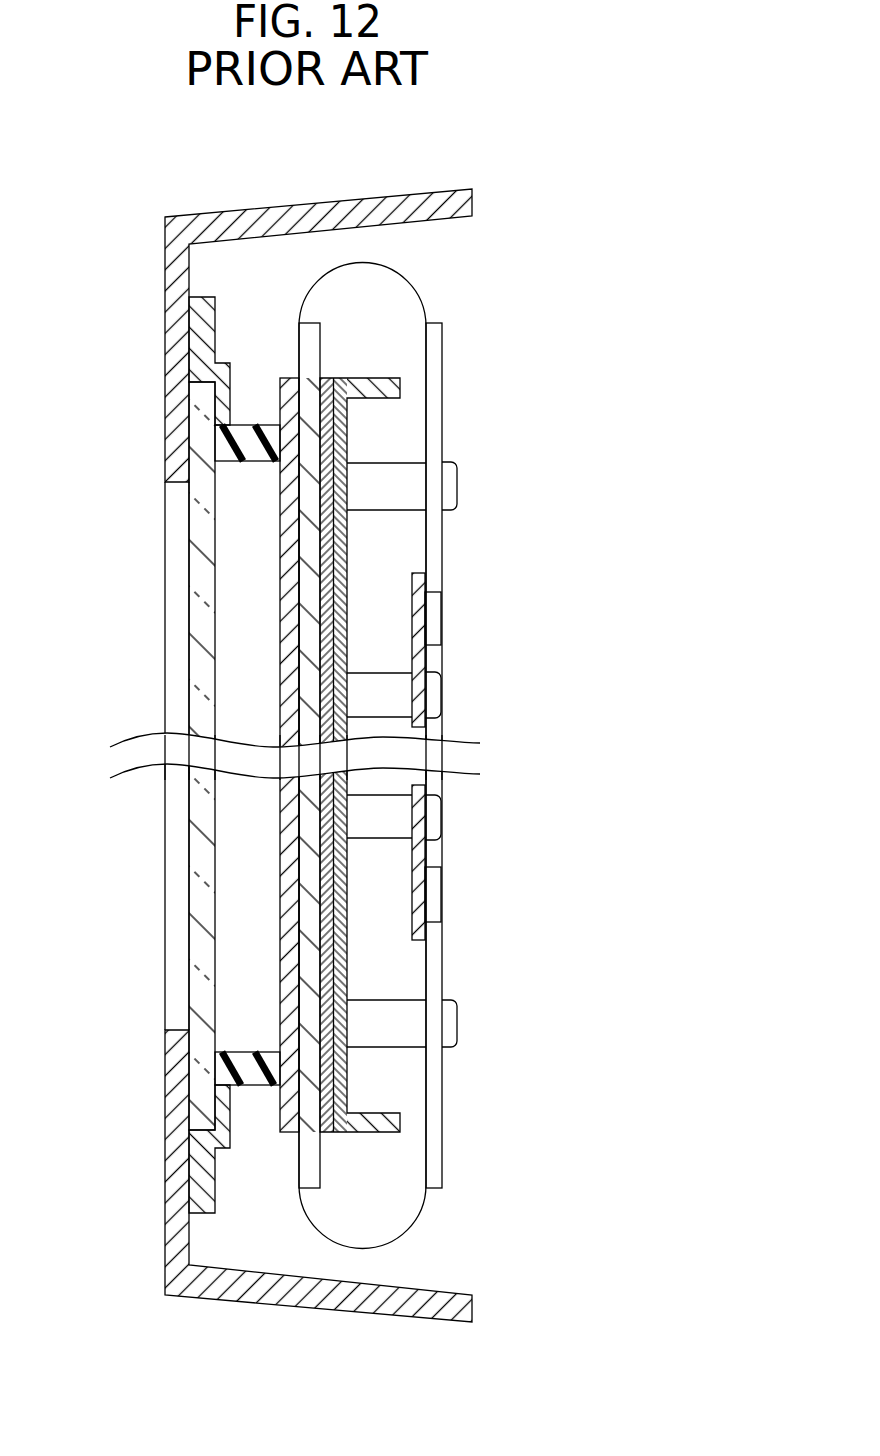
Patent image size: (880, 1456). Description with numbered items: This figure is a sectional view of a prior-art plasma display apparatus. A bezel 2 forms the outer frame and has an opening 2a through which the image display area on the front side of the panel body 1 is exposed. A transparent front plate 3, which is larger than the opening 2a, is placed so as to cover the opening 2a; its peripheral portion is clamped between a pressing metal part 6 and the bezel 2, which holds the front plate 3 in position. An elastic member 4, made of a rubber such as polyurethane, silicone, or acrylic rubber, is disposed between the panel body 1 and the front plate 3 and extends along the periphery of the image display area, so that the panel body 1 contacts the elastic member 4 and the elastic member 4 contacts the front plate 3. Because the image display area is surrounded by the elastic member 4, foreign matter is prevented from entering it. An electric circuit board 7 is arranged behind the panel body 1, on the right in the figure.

The panel body 1 is at (313, 542).
The bezel 2 is at (178, 230).
The opening 2a is at (177, 610).
The transparent front plate 3 is at (197, 915).
The elastic member 4 is at (232, 446).
The pressing metal part 6 is at (200, 303).
The electric circuit board 7 is at (420, 861).